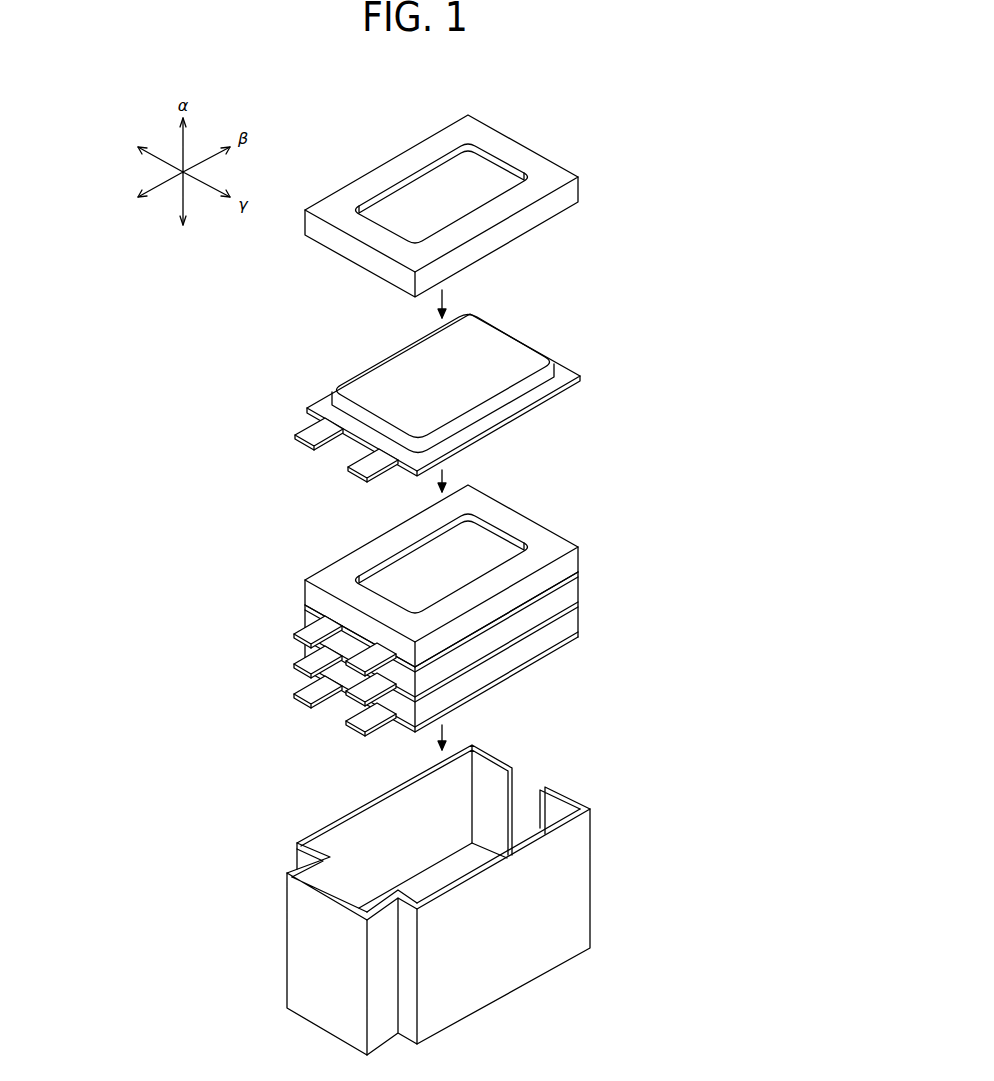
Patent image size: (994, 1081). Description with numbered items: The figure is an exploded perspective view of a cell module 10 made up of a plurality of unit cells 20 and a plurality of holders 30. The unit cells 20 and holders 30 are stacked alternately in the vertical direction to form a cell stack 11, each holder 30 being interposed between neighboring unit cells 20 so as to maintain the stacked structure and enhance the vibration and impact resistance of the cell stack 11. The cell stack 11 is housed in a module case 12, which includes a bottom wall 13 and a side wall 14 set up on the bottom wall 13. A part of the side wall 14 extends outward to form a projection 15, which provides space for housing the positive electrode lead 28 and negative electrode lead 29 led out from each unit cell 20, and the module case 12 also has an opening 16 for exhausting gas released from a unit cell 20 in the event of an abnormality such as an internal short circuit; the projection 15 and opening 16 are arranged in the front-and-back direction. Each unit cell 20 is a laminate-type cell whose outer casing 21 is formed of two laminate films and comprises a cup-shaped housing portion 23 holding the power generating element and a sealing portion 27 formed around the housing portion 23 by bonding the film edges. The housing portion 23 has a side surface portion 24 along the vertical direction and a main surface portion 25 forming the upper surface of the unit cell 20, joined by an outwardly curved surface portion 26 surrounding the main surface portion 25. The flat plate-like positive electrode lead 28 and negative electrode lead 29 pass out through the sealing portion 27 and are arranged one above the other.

The cell module 10 is at (620, 118).
The cell stack 11 is at (577, 543).
The module case 12 is at (438, 887).
The bottom wall 13 is at (440, 882).
The side wall 14 is at (575, 893).
The projection 15 is at (302, 942).
The opening 16 is at (517, 792).
The unit cell 20 is at (461, 519).
The outer casing 21 is at (492, 395).
The housing portion 23 is at (532, 353).
The side surface portion 24 is at (340, 403).
The main surface portion 25 is at (412, 355).
The curved surface portion 26 is at (372, 360).
The sealing portion 27 is at (472, 426).
The positive electrode lead 28 is at (307, 443).
The negative electrode lead 29 is at (355, 472).
The holder 30 is at (578, 180).